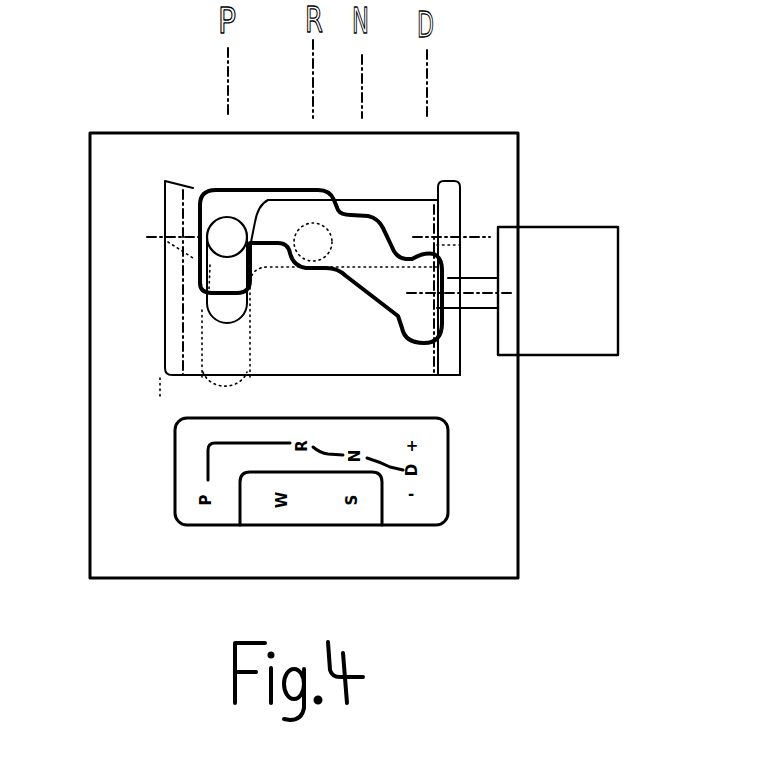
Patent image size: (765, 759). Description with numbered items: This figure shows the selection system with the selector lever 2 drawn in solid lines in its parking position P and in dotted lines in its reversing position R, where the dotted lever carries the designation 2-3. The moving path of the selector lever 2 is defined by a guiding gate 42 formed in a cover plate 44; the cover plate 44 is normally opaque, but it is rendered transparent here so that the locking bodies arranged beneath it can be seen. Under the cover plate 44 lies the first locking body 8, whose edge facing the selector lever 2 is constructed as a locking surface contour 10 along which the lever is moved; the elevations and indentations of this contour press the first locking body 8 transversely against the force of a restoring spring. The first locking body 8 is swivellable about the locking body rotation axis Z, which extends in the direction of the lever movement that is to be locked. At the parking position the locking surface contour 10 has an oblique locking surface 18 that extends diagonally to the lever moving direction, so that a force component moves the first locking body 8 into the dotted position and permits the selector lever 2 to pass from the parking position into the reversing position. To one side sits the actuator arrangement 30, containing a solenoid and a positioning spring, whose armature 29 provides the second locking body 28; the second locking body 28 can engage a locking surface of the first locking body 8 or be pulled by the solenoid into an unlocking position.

The selector lever 2 is at (227, 230).
The first locking body 8 is at (165, 202).
The locking surface contour 10 is at (192, 188).
The oblique locking surface 18 is at (262, 218).
The selector lever in reversing position 2-3 is at (313, 235).
The guiding gate 42 is at (357, 212).
The second locking body 28 is at (483, 308).
The armature 29 is at (465, 308).
The actuator arrangement 30 is at (598, 221).
The cover plate 44 is at (88, 383).
The locking body rotation axis Z is at (147, 237).